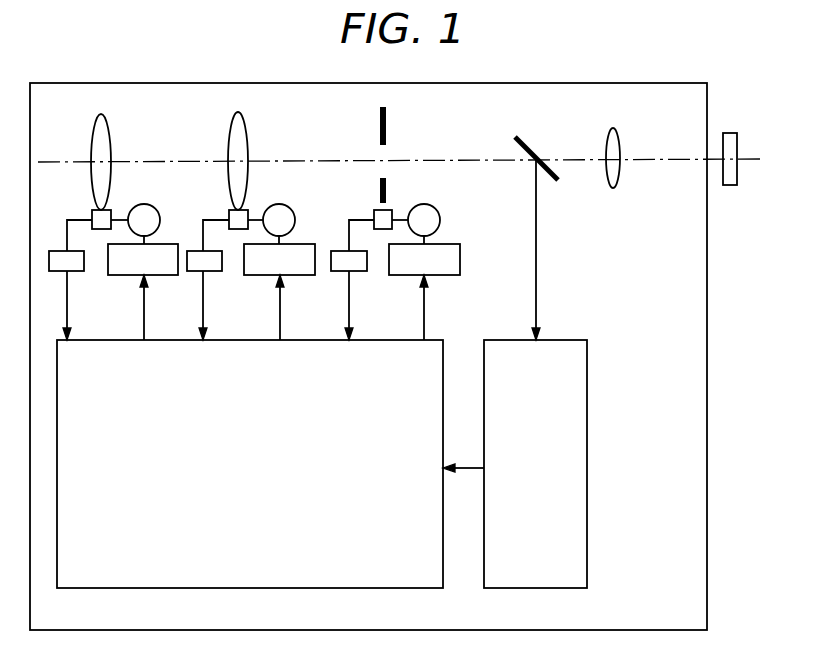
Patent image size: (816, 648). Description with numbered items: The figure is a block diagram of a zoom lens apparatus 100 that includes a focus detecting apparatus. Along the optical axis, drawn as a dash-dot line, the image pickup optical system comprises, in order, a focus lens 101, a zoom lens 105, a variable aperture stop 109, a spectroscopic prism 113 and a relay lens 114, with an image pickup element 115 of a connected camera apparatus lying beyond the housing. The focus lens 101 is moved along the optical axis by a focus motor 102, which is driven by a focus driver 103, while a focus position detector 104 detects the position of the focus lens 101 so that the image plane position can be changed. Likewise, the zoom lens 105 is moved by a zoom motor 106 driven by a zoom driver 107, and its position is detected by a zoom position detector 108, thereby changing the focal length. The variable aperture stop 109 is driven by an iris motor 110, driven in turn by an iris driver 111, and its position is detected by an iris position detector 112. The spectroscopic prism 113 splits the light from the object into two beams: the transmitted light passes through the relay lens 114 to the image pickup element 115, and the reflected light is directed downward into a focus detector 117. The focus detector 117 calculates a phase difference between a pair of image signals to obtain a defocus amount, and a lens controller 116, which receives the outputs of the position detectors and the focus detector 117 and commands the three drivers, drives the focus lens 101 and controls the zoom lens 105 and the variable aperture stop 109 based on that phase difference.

The zoom lens apparatus 100 is at (600, 83).
The focus lens 101 is at (110, 141).
The focus motor 102 is at (143, 207).
The focus driver 103 is at (125, 277).
The focus position detector 104 is at (58, 250).
The zoom lens 105 is at (247, 141).
The zoom motor 106 is at (280, 207).
The zoom driver 107 is at (262, 277).
The zoom position detector 108 is at (194, 250).
The variable aperture stop 109 is at (387, 123).
The iris motor 110 is at (424, 206).
The iris driver 111 is at (408, 277).
The iris position detector 112 is at (340, 250).
The spectroscopic prism 113 is at (534, 154).
The relay lens 114 is at (619, 138).
The image pickup element 115 is at (738, 142).
The lens controller 116 is at (435, 338).
The focus detector 117 is at (558, 338).